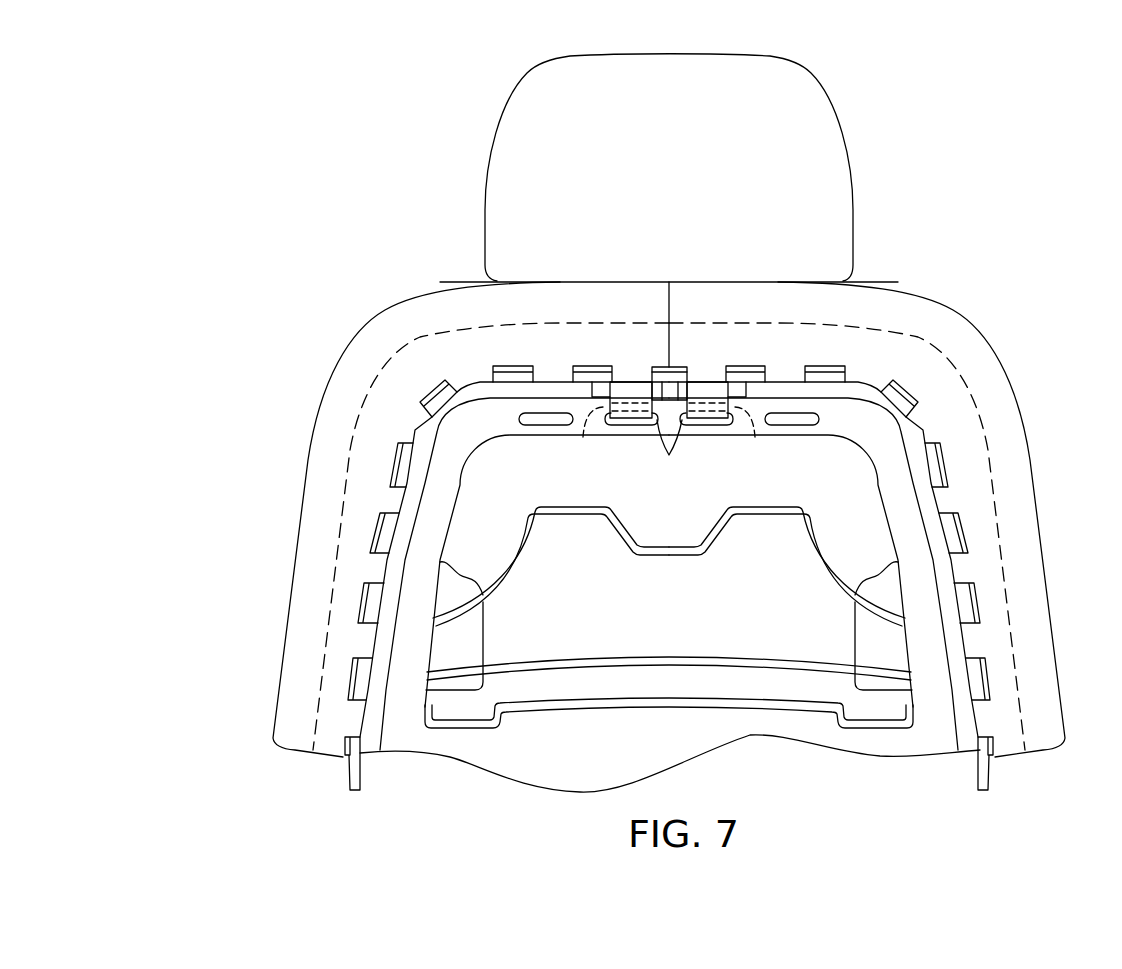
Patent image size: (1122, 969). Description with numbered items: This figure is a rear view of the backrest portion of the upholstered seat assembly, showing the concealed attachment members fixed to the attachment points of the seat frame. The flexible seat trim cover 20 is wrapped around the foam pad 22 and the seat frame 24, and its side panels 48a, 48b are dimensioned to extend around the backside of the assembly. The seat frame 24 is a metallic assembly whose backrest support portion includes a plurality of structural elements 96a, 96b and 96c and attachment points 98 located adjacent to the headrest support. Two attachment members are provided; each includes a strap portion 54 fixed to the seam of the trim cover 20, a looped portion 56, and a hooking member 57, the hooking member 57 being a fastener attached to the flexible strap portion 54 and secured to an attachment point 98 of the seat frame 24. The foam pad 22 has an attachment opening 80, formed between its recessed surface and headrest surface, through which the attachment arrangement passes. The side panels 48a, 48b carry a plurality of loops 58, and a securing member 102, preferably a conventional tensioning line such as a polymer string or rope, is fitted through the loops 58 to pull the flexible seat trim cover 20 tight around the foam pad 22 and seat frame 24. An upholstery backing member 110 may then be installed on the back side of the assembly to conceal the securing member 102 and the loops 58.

The flexible seat trim cover 20 is at (670, 502).
The foam pad 22 is at (560, 473).
The seat frame 24 is at (526, 732).
The side panel 48a is at (316, 552).
The side panel 48b is at (1024, 554).
The strap portion 54 is at (713, 390).
The looped portion 56 is at (630, 408).
The hooking member 57 is at (584, 437).
The loops 58 is at (390, 498).
The attachment opening 80 is at (598, 390).
The structural element 96a is at (664, 548).
The structural element 96b is at (702, 658).
The structural element 96c is at (673, 700).
The attachment point 98 is at (669, 450).
The securing member 102 is at (348, 773).
The upholstery backing member 110 is at (935, 358).